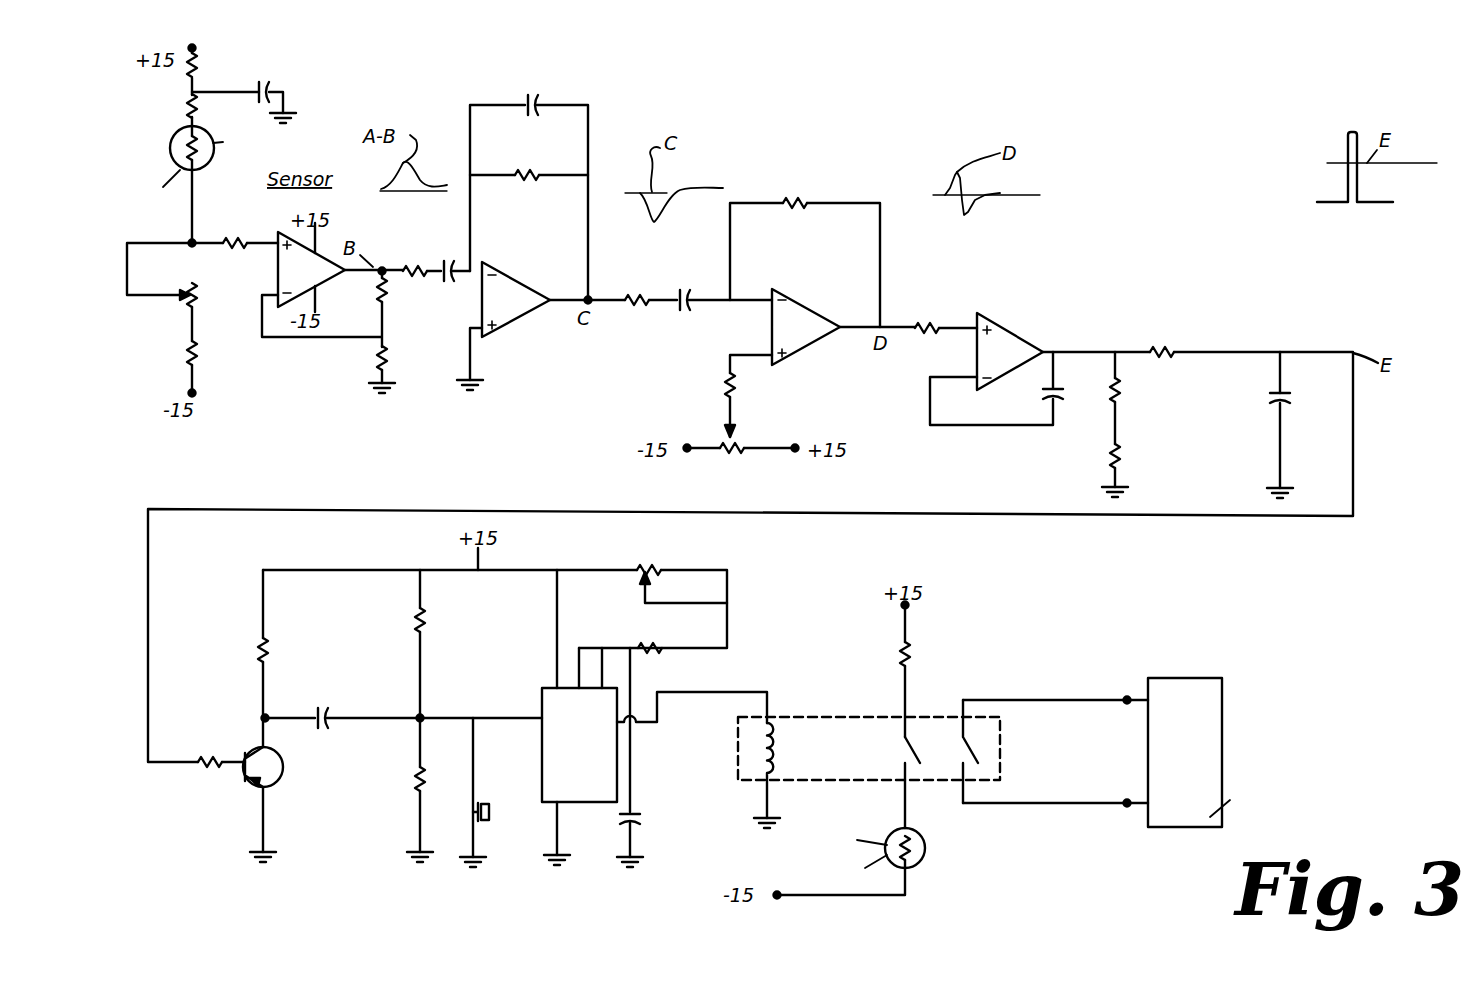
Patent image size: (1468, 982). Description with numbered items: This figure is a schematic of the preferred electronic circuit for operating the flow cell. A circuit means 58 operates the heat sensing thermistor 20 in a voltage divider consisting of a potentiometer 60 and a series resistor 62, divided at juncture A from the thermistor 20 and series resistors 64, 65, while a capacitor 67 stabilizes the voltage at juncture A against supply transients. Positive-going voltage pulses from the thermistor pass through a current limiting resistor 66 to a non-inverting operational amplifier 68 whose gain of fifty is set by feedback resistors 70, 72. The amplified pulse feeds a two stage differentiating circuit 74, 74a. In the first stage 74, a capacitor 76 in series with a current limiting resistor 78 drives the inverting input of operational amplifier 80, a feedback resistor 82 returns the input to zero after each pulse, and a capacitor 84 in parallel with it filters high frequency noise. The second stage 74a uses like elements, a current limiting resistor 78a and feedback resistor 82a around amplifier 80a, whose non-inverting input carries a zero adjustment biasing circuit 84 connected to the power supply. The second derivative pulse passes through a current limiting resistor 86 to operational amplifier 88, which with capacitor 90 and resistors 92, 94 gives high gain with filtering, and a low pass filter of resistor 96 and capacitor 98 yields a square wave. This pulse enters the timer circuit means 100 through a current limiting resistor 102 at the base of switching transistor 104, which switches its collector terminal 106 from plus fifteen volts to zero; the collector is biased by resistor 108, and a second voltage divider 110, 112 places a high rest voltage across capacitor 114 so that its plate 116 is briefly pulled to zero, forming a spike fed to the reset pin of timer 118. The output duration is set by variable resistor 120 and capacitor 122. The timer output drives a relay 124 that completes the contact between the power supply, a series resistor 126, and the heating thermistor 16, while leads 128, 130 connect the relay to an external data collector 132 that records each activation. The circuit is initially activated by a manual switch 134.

The heating thermistor 16 is at (920, 866).
The thermistor 20 is at (170, 150).
The circuit means 58 is at (240, 332).
The potentiometer 60 is at (188, 288).
The series resistor 62 is at (187, 352).
The series resistor 64 is at (188, 78).
The series resistor 65 is at (188, 113).
The current limiting resistor 66 is at (247, 240).
The capacitor 67 is at (265, 88).
The operational amplifier 68 is at (311, 267).
The resistor 70 is at (377, 297).
The resistor 72 is at (373, 358).
The first stage differentiating circuit 74 is at (572, 98).
The second stage differentiating circuit 74a is at (858, 190).
The capacitor 76 is at (442, 283).
The current limiting resistor 78 is at (415, 275).
The current limiting resistor 78a is at (632, 308).
The operational amplifier 80 is at (503, 326).
The second stage amplifier 80a is at (782, 363).
The feedback resistor 82 is at (525, 163).
The feedback resistor 82a is at (787, 212).
The capacitor / zero adjustment biasing circuit 84 is at (525, 100).
The current limiting resistor 86 is at (933, 323).
The operational amplifier 88 is at (1008, 332).
The capacitor 90 is at (1053, 392).
The resistor 92 is at (1120, 402).
The resistor 94 is at (1127, 460).
The resistor 96 is at (1167, 358).
The capacitor 98 is at (1283, 392).
The timer circuit means 100 is at (755, 582).
The current limiting resistor 102 is at (197, 767).
The switching transistor 104 is at (282, 768).
The collector terminal 106 is at (258, 733).
The resistor 108 is at (262, 645).
The resistor of second voltage divider 110 is at (427, 617).
The resistor of second voltage divider 112 is at (415, 787).
The capacitor 114 is at (327, 730).
The capacitor plate 116 is at (327, 710).
The timer 118 is at (579, 745).
The variable resistor 120 is at (643, 572).
The capacitor 122 is at (635, 815).
The relay 124 is at (935, 800).
The series resistor 126 is at (917, 645).
The lead 128 is at (1058, 685).
The lead 130 is at (1077, 803).
The external data collector 132 is at (1256, 752).
The manual switch 134 is at (473, 822).